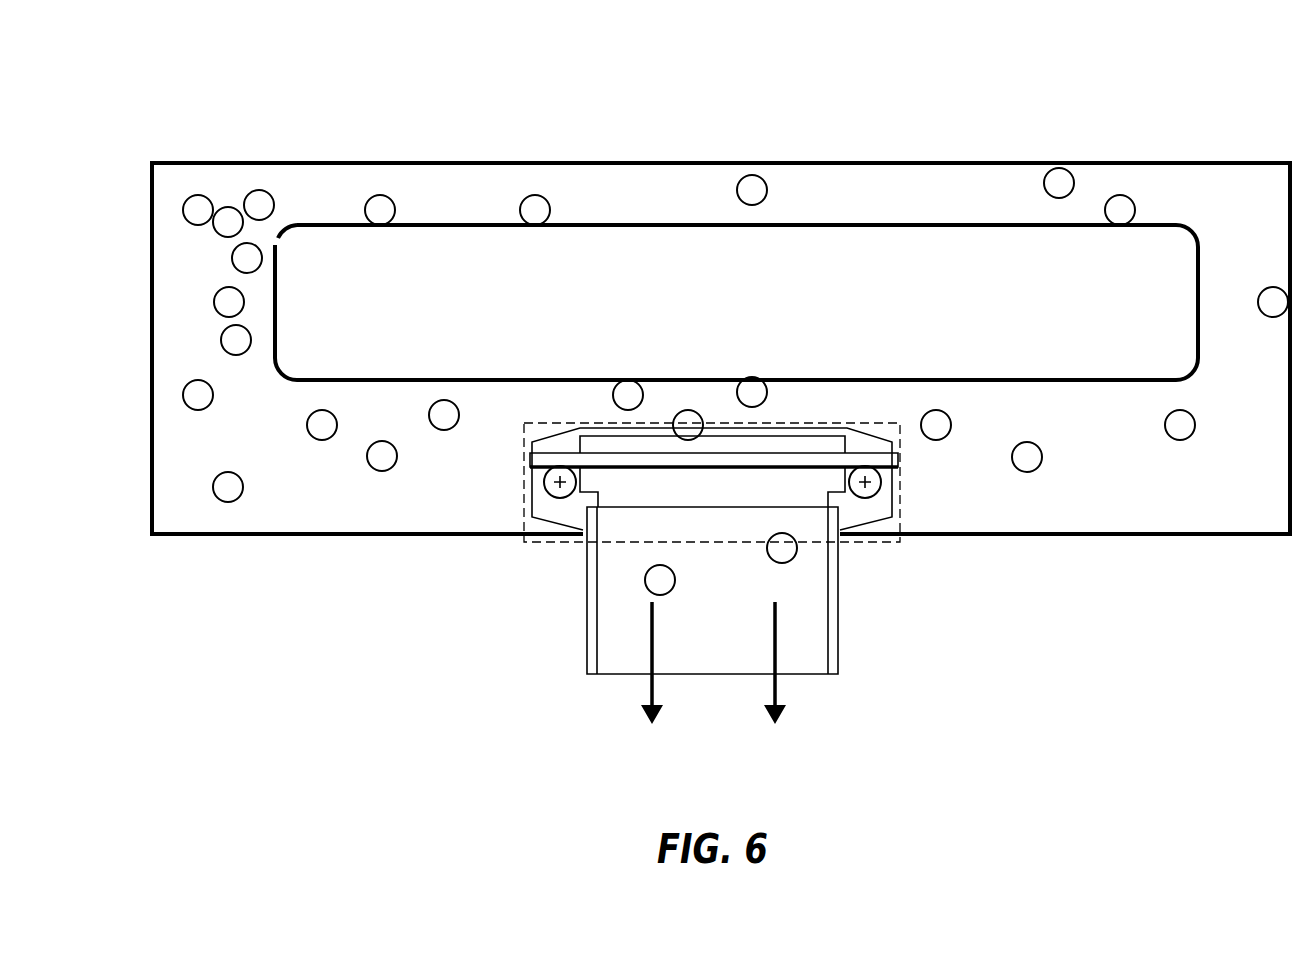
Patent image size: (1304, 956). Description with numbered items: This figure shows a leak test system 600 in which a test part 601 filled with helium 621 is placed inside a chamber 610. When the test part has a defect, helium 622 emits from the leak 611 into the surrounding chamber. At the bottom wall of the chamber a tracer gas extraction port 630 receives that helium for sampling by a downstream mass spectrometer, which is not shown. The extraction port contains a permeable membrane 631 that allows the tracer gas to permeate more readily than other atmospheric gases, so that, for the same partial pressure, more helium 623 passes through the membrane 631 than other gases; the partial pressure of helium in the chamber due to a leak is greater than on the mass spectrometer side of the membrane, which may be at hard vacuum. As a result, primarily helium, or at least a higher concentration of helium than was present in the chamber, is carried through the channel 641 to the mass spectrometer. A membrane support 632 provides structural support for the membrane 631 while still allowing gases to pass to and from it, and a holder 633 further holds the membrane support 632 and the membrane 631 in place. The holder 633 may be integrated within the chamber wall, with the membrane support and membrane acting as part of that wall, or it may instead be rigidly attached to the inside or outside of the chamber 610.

The leak test system 600 is at (680, 394).
The test part 601 is at (927, 227).
The chamber 610 is at (800, 163).
The leak 611 is at (274, 232).
The helium 621 is at (736, 221).
The helium 622 is at (220, 498).
The helium 623 is at (645, 578).
The tracer gas extraction port 630 is at (703, 558).
The permeable membrane 631 is at (893, 461).
The membrane support 632 is at (588, 481).
The holder 633 is at (863, 517).
The channel 641 is at (586, 658).